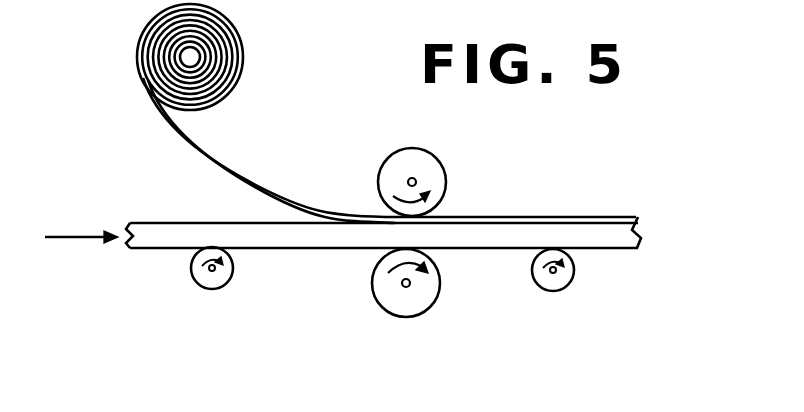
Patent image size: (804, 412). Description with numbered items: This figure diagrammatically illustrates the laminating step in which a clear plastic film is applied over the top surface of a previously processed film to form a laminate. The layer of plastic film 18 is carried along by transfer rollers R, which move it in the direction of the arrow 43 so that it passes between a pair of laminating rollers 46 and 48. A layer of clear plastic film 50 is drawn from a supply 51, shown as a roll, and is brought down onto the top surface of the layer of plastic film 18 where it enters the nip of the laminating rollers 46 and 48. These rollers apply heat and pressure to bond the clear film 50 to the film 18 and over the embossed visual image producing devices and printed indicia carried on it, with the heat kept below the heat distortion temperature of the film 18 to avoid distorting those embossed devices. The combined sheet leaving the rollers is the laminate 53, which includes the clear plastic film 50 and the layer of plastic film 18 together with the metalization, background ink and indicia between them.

The supply of clear plastic film 51 is at (243, 54).
The layer of clear plastic film 50 is at (262, 185).
The layer of plastic film 18 is at (130, 228).
The laminate 53 is at (646, 234).
The arrow 43 is at (78, 240).
The laminating roller 46 is at (433, 155).
The laminating roller 48 is at (402, 318).
The transfer rollers R is at (219, 284).